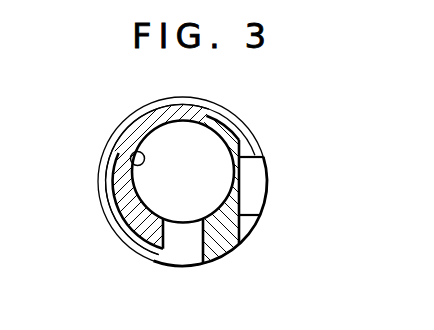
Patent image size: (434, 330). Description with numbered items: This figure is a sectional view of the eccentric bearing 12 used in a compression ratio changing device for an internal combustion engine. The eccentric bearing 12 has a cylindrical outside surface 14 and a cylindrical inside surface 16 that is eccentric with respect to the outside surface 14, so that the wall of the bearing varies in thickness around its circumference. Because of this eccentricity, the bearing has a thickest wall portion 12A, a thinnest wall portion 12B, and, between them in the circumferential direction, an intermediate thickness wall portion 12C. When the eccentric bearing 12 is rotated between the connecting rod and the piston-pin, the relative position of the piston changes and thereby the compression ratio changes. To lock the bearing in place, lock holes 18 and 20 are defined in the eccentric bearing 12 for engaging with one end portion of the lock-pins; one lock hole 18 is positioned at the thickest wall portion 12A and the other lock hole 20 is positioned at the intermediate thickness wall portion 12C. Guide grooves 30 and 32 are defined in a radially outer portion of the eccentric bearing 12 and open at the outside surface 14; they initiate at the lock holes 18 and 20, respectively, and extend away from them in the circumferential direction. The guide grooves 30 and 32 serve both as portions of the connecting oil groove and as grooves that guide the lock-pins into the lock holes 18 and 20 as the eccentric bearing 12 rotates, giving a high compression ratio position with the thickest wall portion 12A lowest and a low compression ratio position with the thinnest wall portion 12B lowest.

The eccentric bearing 12 is at (260, 134).
The thickest wall portion 12A is at (176, 238).
The thinnest wall portion 12B is at (178, 104).
The intermediate thickness wall portion 12C is at (255, 186).
The cylindrical outside surface 14 is at (116, 131).
The cylindrical inside surface 16 is at (130, 156).
The lock hole 18 is at (203, 239).
The lock hole 20 is at (252, 160).
The guide groove 30 is at (135, 248).
The guide groove 32 is at (263, 215).